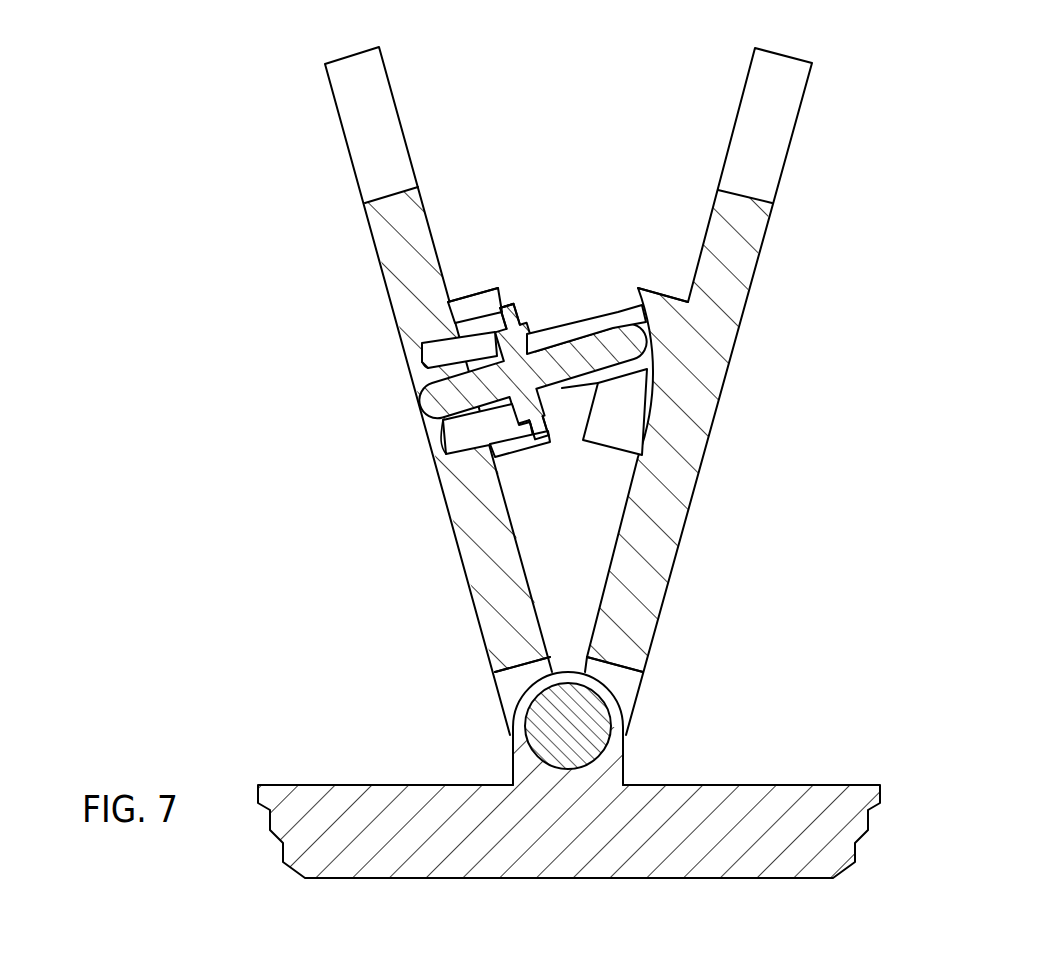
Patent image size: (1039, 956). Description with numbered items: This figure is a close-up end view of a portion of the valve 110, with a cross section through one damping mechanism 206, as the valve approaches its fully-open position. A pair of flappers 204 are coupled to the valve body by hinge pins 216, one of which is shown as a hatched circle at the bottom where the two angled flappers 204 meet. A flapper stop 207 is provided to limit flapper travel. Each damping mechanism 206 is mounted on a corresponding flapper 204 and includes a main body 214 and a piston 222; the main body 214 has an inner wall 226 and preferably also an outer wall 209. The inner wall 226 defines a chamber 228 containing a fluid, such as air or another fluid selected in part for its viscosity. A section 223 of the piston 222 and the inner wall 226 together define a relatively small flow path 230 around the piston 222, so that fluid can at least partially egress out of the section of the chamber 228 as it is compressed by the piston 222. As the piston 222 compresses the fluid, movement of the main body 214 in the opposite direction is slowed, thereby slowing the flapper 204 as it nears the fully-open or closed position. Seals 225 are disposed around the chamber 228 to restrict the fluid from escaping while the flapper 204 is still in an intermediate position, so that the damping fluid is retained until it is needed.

The valve 110 is at (633, 462).
The flapper 204 is at (380, 240).
The damping mechanism 206 is at (512, 466).
The flapper stop 207 is at (493, 287).
The outer wall 209 is at (617, 306).
The main body 214 is at (474, 318).
The hinge pin 216 is at (542, 729).
The piston 222 is at (516, 340).
The piston section 223 is at (514, 318).
The seal 225 is at (480, 457).
The inner wall 226 is at (422, 345).
The chamber 228 is at (430, 366).
The flow path 230 is at (504, 308).